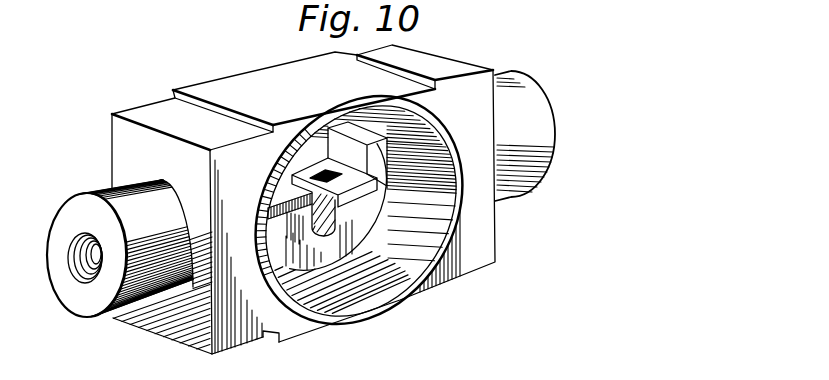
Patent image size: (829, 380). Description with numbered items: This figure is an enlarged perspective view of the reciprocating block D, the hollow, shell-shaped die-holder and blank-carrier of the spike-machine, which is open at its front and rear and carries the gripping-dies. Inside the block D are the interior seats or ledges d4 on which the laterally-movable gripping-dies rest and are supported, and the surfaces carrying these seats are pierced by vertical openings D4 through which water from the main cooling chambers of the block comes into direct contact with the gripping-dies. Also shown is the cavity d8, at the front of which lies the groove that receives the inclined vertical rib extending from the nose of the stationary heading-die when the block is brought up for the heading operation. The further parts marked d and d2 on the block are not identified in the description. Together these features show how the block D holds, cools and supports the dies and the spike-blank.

The reciprocating block D is at (308, 207).
The trunnion / pin d is at (51, 249).
The rib flange d2 is at (466, 275).
The interior seats or ledges d4 is at (352, 187).
The cavity d8 is at (290, 176).
The vertical openings D4 is at (318, 168).